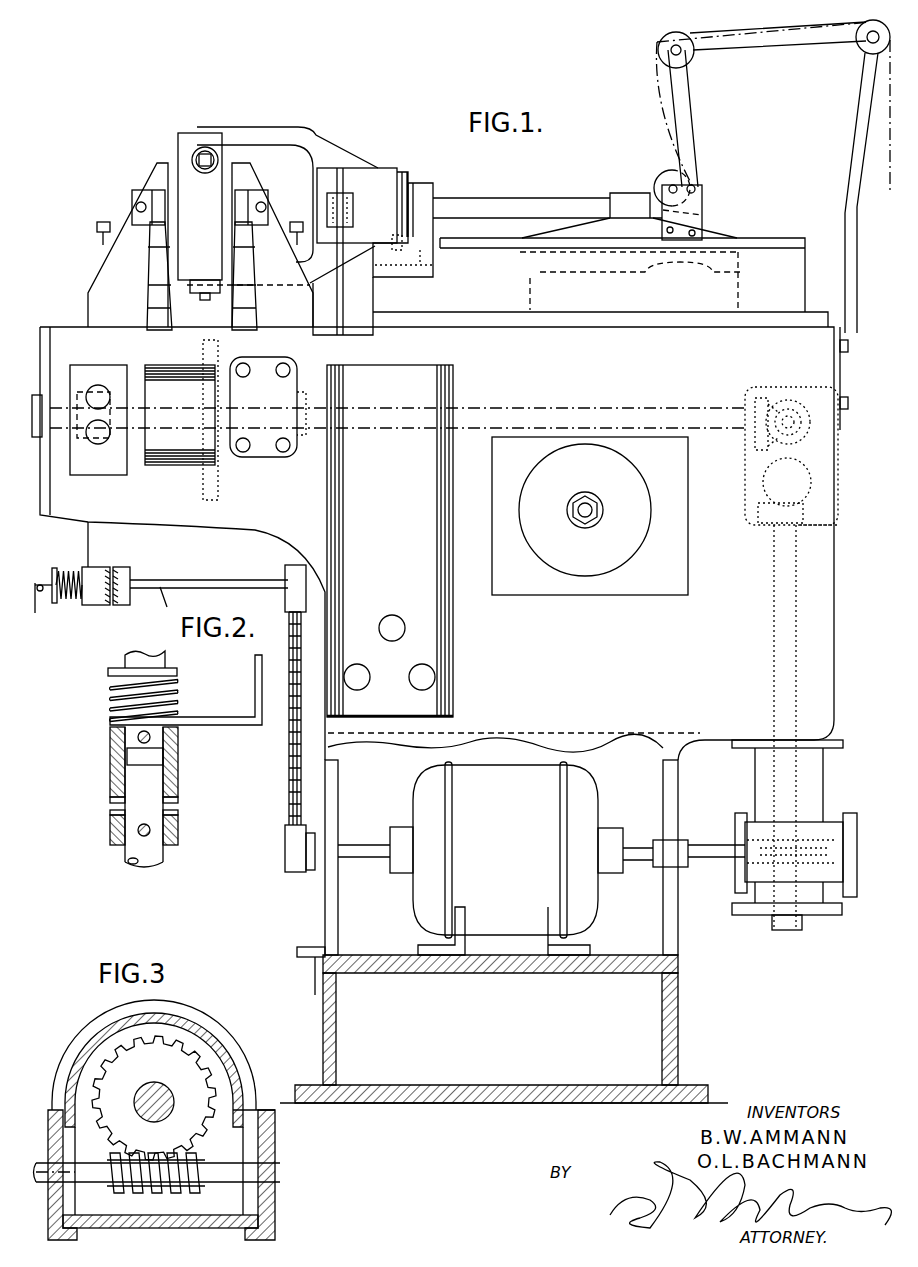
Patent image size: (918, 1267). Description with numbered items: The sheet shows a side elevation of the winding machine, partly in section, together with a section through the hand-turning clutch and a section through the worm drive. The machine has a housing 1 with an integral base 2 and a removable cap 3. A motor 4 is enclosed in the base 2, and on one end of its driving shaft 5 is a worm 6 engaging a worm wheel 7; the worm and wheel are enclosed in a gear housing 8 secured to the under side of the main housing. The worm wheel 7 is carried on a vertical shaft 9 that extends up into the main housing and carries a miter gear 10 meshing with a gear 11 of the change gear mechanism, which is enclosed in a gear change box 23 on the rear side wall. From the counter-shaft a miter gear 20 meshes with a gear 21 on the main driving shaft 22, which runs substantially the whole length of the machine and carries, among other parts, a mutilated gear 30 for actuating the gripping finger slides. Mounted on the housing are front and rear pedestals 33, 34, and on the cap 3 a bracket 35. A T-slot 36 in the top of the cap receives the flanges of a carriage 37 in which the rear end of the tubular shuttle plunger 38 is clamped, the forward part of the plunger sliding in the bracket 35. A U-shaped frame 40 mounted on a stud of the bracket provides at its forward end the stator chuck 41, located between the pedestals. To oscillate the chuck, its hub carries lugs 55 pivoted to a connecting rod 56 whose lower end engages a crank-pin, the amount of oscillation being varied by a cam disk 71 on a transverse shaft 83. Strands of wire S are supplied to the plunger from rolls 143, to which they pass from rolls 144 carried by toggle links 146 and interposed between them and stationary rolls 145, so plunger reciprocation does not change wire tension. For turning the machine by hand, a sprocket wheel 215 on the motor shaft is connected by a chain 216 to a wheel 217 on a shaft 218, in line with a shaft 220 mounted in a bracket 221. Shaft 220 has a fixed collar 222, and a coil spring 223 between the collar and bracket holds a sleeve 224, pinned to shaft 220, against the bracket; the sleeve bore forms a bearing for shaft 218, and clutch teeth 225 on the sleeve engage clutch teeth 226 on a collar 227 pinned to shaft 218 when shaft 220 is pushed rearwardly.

In FIG. 1, the housing 1 is at (440, 536).
In FIG. 1, the base 2 is at (360, 997).
In FIG. 1, the removable cap 3 is at (868, 852).
In FIG. 1, the motor 4 is at (506, 858).
In FIG. 1, the driving shaft 5 is at (700, 860).
In FIG. 3, the driving shaft 5 is at (43, 1183).
In FIG. 3, the worm 6 is at (182, 1192).
In FIG. 3, the worm wheel 7 is at (154, 1098).
In FIG. 1, the gear housing 8 is at (762, 782).
In FIG. 3, the gear housing 8 is at (207, 1022).
In FIG. 1, the vertical shaft 9 is at (795, 673).
In FIG. 3, the vertical shaft 9 is at (168, 1097).
In FIG. 1, the miter gear 10 is at (807, 503).
In FIG. 1, the gear 11 is at (792, 486).
In FIG. 1, the miter gear 20 is at (800, 443).
In FIG. 1, the gear 21 is at (747, 410).
In FIG. 1, the main driving shaft 22 is at (505, 422).
In FIG. 1, the gear change box 23 is at (747, 515).
In FIG. 1, the mutilated gear 30 is at (214, 482).
In FIG. 1, the front pedestal 33 is at (130, 246).
In FIG. 1, the rear pedestal 34 is at (250, 246).
In FIG. 1, the bracket 35 is at (392, 252).
In FIG. 1, the T-slot 36 is at (766, 300).
In FIG. 1, the carriage 37 is at (629, 217).
In FIG. 1, the shuttle plunger 38 is at (547, 213).
In FIG. 1, the U-shaped frame 40 is at (340, 162).
In FIG. 1, the stator chuck 41 is at (200, 216).
In FIG. 1, the lugs 55 is at (352, 218).
In FIG. 1, the connecting rod 56 is at (347, 327).
In FIG. 1, the cam disk 71 is at (585, 497).
In FIG. 1, the transverse shaft 83 is at (590, 516).
In FIG. 1, the rolls 143 is at (660, 182).
In FIG. 1, the rolls 144 is at (660, 62).
In FIG. 1, the stationary rolls 145 is at (862, 50).
In FIG. 1, the toggle links 146 is at (695, 100).
In FIG. 1, the strands of wire S is at (667, 95).
In FIG. 1, the sprocket wheel 215 is at (287, 853).
In FIG. 1, the chain 216 is at (287, 803).
In FIG. 1, the wheel 217 is at (287, 600).
In FIG. 1, the shaft 218 is at (217, 587).
In FIG. 2, the shaft 218 is at (140, 852).
In FIG. 1, the shaft 220 is at (47, 578).
In FIG. 2, the shaft 220 is at (152, 662).
In FIG. 1, the bracket 221 is at (90, 553).
In FIG. 2, the bracket 221 is at (213, 722).
In FIG. 1, the fixed collar 222 is at (48, 603).
In FIG. 2, the fixed collar 222 is at (108, 672).
In FIG. 2, the coil spring 223 is at (110, 705).
In FIG. 2, the sleeve 224 is at (110, 768).
In FIG. 2, the clutch teeth 225 is at (180, 800).
In FIG. 2, the clutch teeth 226 is at (110, 813).
In FIG. 2, the collar 227 is at (107, 837).